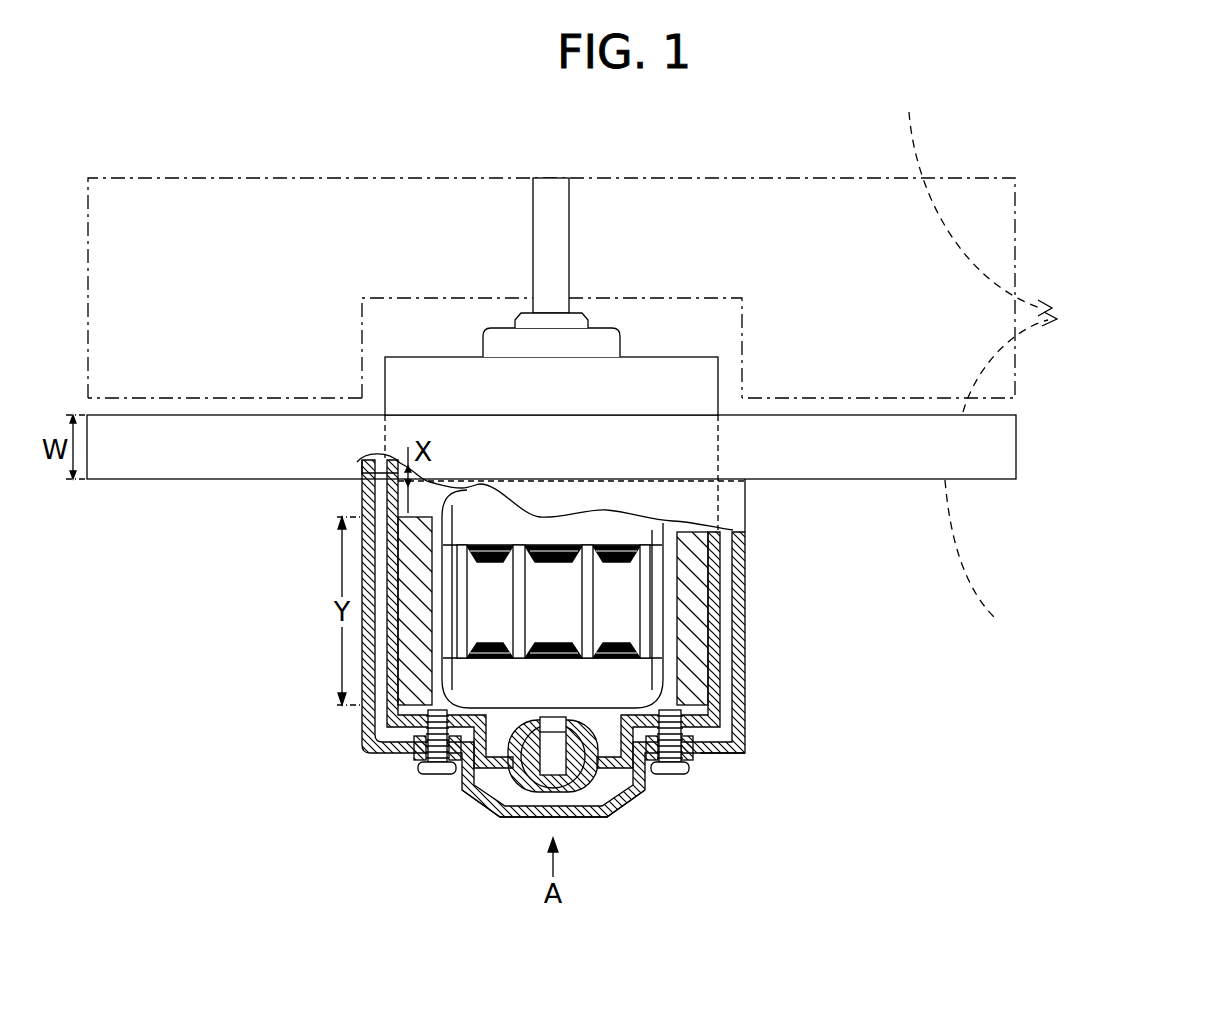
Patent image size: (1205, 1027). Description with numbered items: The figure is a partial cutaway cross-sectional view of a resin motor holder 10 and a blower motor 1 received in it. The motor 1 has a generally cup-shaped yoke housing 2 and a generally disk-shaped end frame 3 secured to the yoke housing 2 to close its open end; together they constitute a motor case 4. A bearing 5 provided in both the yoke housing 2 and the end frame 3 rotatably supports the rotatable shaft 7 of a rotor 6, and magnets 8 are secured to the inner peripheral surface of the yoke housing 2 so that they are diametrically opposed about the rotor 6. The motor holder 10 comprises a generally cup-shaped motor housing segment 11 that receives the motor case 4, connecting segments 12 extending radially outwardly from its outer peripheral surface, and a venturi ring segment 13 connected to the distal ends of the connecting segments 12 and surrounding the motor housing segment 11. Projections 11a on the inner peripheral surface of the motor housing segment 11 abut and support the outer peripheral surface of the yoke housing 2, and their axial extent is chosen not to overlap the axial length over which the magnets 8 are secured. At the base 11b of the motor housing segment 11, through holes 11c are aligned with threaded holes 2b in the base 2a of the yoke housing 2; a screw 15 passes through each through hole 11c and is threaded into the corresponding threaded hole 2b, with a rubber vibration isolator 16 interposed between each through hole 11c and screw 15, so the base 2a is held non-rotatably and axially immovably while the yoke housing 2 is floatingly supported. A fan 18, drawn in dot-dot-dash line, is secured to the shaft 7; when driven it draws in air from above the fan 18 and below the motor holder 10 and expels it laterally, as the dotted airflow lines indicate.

The blower motor 1 is at (718, 373).
The yoke housing 2 is at (652, 366).
The base 2a is at (401, 728).
The threaded holes 2b is at (470, 708).
The end frame 3 is at (600, 329).
The motor case 4 is at (617, 254).
The bearing 5 is at (580, 772).
The rotor 6 is at (568, 520).
The rotatable shaft 7 is at (533, 232).
The magnets 8 is at (400, 703).
The motor holder 10 is at (1016, 443).
The motor housing segment 11 is at (745, 650).
The projections 11a is at (362, 488).
The base 11b is at (733, 753).
The through holes 11c is at (417, 762).
The connecting segments 12 is at (357, 461).
The venturi ring segment 13 is at (917, 472).
The screw 15 is at (437, 775).
The rubber vibration isolator 16 is at (468, 780).
The fan 18 is at (1015, 235).